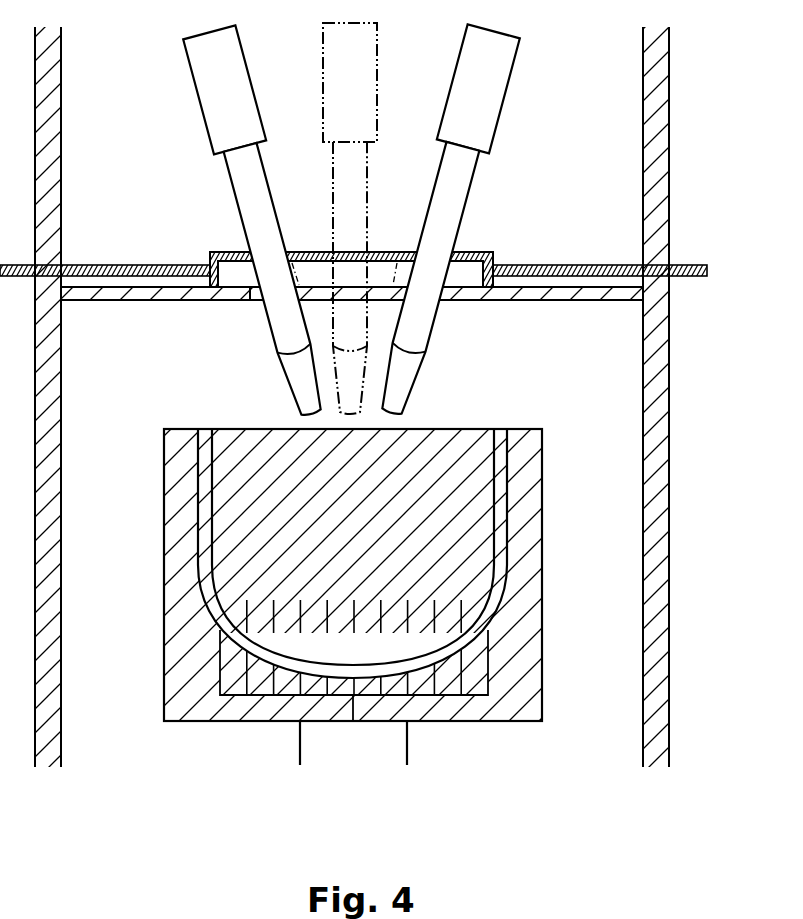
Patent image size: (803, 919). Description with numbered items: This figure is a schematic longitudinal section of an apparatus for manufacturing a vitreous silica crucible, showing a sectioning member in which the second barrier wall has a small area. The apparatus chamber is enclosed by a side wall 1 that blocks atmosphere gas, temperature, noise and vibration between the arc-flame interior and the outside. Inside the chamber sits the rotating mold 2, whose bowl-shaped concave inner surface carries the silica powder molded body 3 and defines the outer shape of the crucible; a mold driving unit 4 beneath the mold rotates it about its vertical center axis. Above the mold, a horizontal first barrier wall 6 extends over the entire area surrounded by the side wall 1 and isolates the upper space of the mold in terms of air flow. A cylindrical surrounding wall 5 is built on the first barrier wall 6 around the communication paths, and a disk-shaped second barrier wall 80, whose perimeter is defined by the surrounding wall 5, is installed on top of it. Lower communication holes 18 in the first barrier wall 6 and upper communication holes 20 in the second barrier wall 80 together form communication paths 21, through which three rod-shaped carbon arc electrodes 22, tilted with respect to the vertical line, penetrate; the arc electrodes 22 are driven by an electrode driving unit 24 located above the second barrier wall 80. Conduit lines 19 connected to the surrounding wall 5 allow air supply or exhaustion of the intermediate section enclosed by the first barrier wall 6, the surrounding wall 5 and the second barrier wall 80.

The side wall 1 is at (670, 528).
The mold 2 is at (542, 640).
The silica powder molded body 3 is at (482, 508).
The mold driving unit 4 is at (407, 745).
The surrounding wall 5 is at (493, 283).
The first barrier wall 6 is at (575, 300).
The lower communication hole 18 is at (258, 290).
The conduit line 19 is at (112, 265).
The upper communication hole 20 is at (245, 263).
The communication path 21 is at (238, 270).
The arc electrode 22 is at (267, 181).
The electrode driving unit 24 is at (242, 50).
The second barrier wall 80 is at (478, 252).